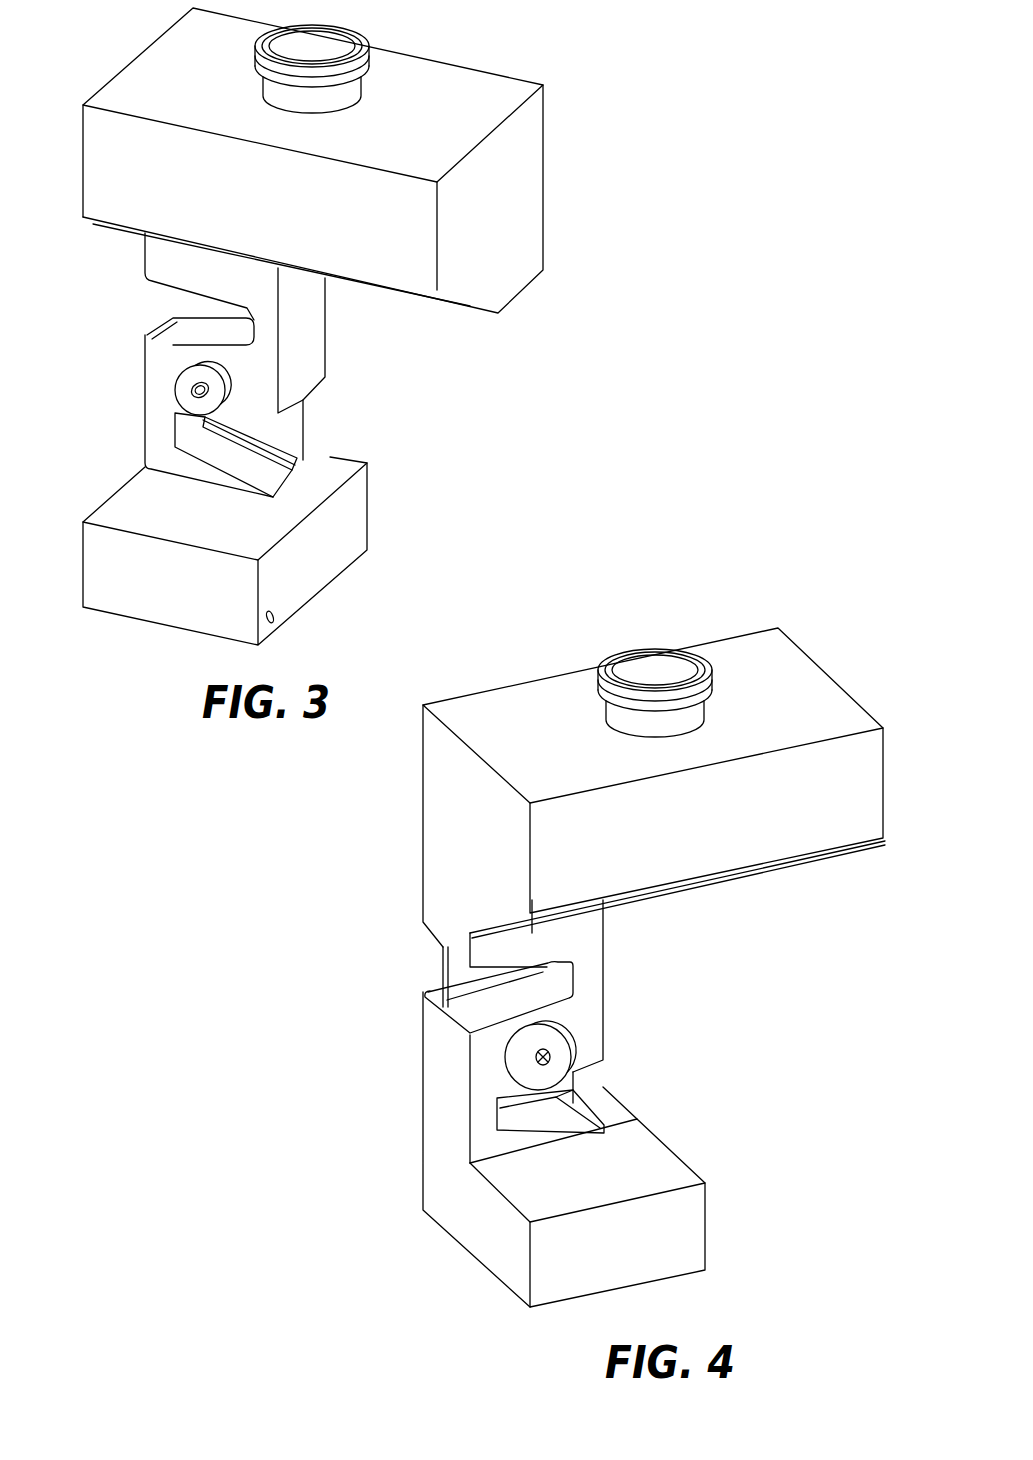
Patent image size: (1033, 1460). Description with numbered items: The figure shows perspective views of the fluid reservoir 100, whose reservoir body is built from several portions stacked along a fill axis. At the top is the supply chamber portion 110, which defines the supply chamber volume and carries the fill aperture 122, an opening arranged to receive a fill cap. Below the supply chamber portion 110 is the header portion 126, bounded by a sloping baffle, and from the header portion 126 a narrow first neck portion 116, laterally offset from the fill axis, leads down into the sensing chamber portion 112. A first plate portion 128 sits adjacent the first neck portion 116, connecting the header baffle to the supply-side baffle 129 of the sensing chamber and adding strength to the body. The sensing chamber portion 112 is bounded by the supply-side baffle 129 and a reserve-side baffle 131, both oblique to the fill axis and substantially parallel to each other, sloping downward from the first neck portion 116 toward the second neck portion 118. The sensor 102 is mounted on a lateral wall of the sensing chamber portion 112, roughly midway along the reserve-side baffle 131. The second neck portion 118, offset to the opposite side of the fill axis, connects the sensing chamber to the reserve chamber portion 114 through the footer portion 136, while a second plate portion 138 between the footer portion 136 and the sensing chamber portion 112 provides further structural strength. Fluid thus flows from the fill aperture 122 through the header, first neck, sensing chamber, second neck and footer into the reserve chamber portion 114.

In FIG. 3, the fluid reservoir 100 is at (112, 635).
In FIG. 4, the fluid reservoir 100 is at (445, 1266).
In FIG. 4, the sensor 102 is at (553, 1048).
In FIG. 3, the supply chamber portion 110 is at (500, 216).
In FIG. 4, the supply chamber portion 110 is at (705, 832).
In FIG. 4, the sensing chamber portion 112 is at (510, 1070).
In FIG. 3, the reserve chamber portion 114 is at (307, 550).
In FIG. 4, the reserve chamber portion 114 is at (625, 1257).
In FIG. 3, the first neck portion 116 is at (307, 297).
In FIG. 4, the first neck portion 116 is at (590, 980).
In FIG. 4, the second neck portion 118 is at (487, 1117).
In FIG. 3, the fill aperture 122 is at (312, 43).
In FIG. 4, the fill aperture 122 is at (655, 670).
In FIG. 3, the header portion 126 is at (200, 268).
In FIG. 4, the header portion 126 is at (567, 940).
In FIG. 3, the first plate portion 128 is at (192, 303).
In FIG. 4, the first plate portion 128 is at (482, 975).
In FIG. 3, the supply-side baffle 129 is at (196, 341).
In FIG. 4, the supply-side baffle 129 is at (504, 1012).
In FIG. 3, the reserve-side baffle 131 is at (277, 420).
In FIG. 4, the reserve-side baffle 131 is at (576, 1082).
In FIG. 3, the footer portion 136 is at (197, 467).
In FIG. 4, the footer portion 136 is at (547, 1138).
In FIG. 3, the second plate portion 138 is at (287, 478).
In FIG. 4, the second plate portion 138 is at (552, 1093).